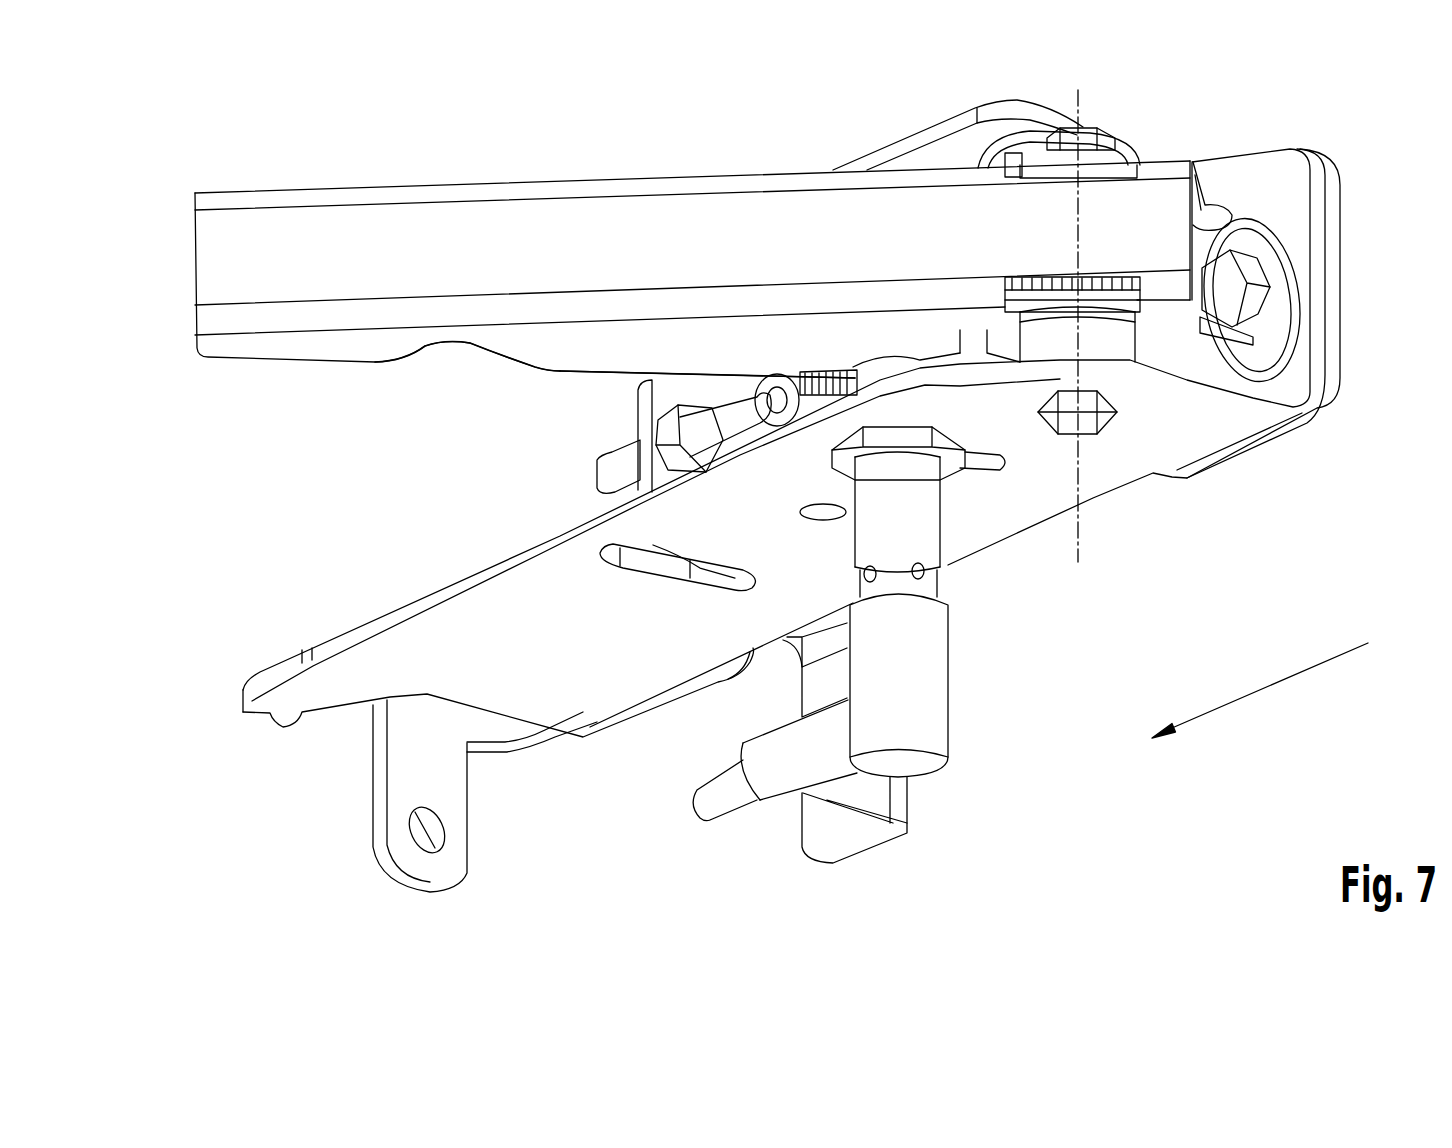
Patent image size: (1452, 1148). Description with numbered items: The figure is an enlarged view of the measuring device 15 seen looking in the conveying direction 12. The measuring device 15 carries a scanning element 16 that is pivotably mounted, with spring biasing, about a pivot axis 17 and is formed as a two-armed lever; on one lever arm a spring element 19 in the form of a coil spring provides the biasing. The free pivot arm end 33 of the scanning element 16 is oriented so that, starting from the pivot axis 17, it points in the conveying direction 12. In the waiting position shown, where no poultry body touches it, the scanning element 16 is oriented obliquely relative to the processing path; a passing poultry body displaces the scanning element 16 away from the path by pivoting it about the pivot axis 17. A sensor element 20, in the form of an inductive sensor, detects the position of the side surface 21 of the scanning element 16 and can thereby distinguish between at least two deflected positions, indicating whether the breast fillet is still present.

The conveying direction 12 is at (1240, 700).
The measuring device 15 is at (302, 770).
The scanning element 16 is at (323, 388).
The pivot axis 17 is at (1081, 527).
The spring element 19 is at (823, 340).
The sensor element 20 is at (942, 683).
The side surface 21 is at (547, 358).
The free pivot arm end 33 is at (205, 254).